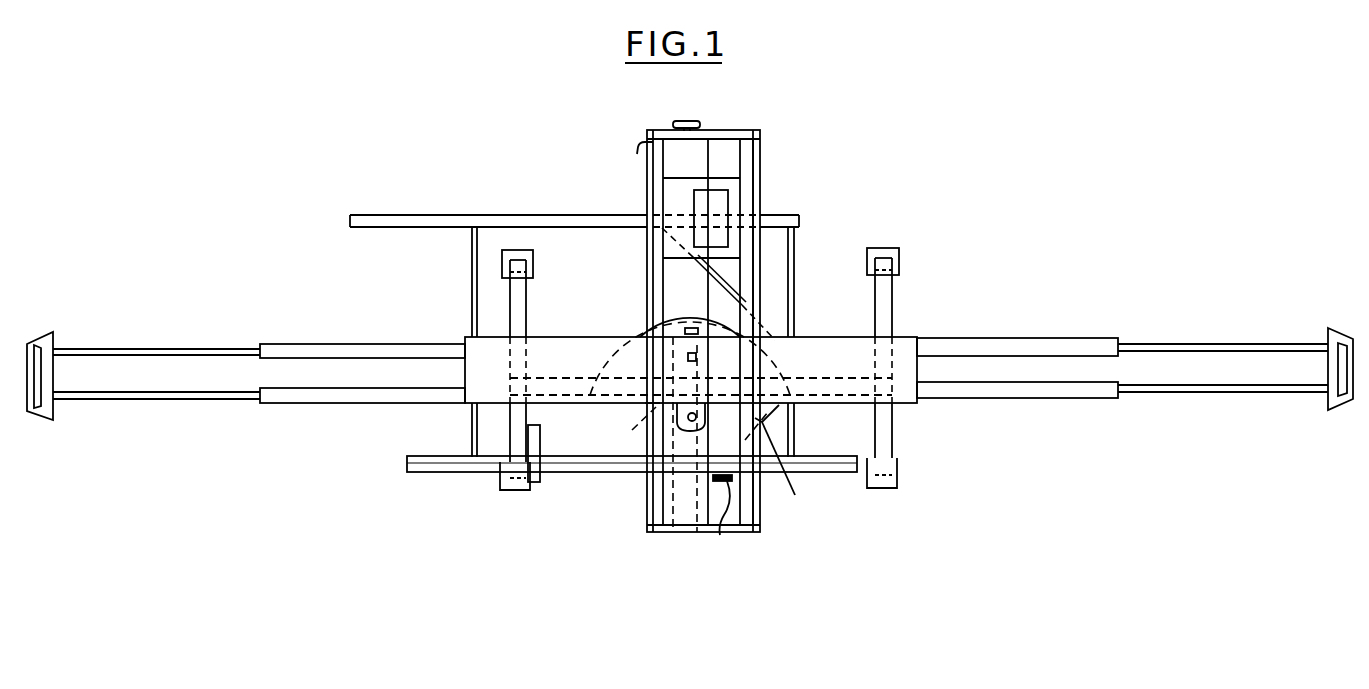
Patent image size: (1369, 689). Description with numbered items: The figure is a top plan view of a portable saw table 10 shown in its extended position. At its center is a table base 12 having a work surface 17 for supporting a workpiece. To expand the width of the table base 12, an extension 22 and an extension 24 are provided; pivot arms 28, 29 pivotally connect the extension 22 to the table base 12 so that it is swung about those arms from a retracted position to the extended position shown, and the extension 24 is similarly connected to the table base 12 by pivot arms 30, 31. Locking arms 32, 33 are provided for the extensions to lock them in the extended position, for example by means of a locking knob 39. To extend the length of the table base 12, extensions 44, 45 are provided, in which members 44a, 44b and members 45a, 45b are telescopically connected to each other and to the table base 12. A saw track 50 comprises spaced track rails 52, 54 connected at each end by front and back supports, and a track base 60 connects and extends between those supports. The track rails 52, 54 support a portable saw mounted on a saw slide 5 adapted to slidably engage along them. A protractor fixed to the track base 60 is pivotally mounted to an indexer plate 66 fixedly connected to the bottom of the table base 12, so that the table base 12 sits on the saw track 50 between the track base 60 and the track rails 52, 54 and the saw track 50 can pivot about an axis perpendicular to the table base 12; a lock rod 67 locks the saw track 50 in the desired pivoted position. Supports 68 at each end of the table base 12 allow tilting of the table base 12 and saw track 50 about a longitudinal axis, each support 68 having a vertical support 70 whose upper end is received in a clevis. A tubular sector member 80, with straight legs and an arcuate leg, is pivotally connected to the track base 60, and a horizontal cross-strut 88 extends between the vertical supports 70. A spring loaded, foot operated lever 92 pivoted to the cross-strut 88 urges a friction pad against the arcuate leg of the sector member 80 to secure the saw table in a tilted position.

The portable saw table 10 is at (579, 198).
The saw slide 5 is at (735, 242).
The table base 12 is at (917, 333).
The work surface 17 is at (566, 345).
The extension 22 is at (513, 216).
The extension 24 is at (474, 468).
The pivot arm 28 is at (796, 268).
The pivot arm 29 is at (471, 291).
The pivot arm 30 is at (797, 421).
The pivot arm 31 is at (470, 426).
The locking arm 32 is at (776, 326).
The locking arm 33 is at (787, 464).
The locking knob 39 is at (720, 535).
The extension 44 is at (1052, 330).
The member 44a is at (944, 405).
The member 44b is at (1190, 401).
The extension 45 is at (398, 342).
The member 45a is at (338, 406).
The member 45b is at (199, 402).
The saw track 50 is at (768, 196).
The track rail 52 is at (650, 183).
The track rail 54 is at (762, 160).
The track base 60 is at (705, 155).
The indexer plate 66 is at (676, 322).
The lock rod 67 is at (690, 121).
The support 68 is at (537, 297).
The vertical support 70 is at (543, 368).
The sector member 80 is at (672, 540).
The cross-strut 88 is at (570, 403).
The lever 92 is at (644, 413).